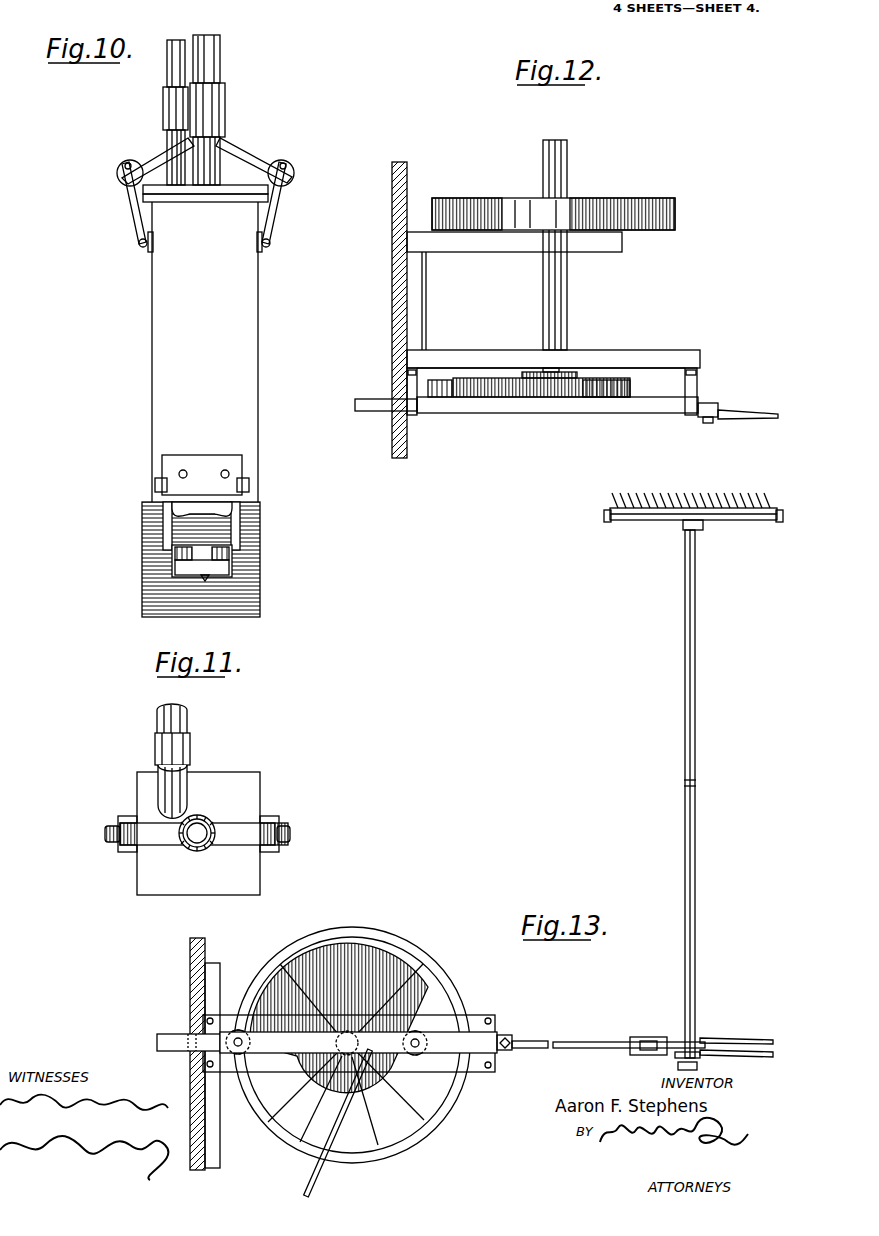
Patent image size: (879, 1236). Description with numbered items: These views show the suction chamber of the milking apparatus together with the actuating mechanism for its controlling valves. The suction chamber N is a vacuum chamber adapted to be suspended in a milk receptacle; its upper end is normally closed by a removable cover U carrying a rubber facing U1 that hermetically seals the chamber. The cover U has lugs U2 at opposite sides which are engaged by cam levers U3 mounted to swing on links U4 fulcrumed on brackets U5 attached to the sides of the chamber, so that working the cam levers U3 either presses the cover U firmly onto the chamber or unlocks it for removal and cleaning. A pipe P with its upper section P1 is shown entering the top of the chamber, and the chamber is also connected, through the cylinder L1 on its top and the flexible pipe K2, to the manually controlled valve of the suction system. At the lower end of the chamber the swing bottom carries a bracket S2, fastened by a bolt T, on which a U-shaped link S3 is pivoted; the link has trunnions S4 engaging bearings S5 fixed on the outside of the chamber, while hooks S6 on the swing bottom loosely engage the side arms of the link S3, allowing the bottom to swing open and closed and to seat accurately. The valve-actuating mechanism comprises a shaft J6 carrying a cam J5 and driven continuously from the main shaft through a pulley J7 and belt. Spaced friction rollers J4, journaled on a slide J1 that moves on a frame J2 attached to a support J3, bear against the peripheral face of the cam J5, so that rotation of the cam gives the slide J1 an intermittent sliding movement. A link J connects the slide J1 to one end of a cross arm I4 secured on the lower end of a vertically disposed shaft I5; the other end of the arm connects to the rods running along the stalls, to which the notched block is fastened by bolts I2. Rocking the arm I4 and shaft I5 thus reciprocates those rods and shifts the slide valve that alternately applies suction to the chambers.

In FIG. 10, the upper pipe section P1 is at (220, 66).
In FIG. 11, the upper pipe section P1 is at (180, 723).
In FIG. 10, the pipe P is at (207, 170).
In FIG. 11, the pipe P is at (178, 788).
In FIG. 10, the removable cover U is at (193, 192).
In FIG. 10, the rubber facing U1 is at (230, 197).
In FIG. 11, the rubber facing U1 is at (197, 834).
In FIG. 10, the lugs U2 is at (120, 184).
In FIG. 11, the lugs U2 is at (105, 838).
In FIG. 10, the cam levers U3 is at (167, 153).
In FIG. 11, the cam levers U3 is at (123, 835).
In FIG. 10, the links U4 is at (278, 215).
In FIG. 11, the links U4 is at (122, 820).
In FIG. 10, the brackets U5 is at (148, 258).
In FIG. 10, the suction chamber N is at (163, 387).
In FIG. 11, the suction chamber N is at (175, 888).
In FIG. 10, the bracket S2 is at (190, 570).
In FIG. 10, the U-shaped link S3 is at (240, 538).
In FIG. 10, the trunnions S4 is at (155, 481).
In FIG. 10, the bearings S5 is at (178, 464).
In FIG. 10, the lugs or hooks S6 is at (247, 517).
In FIG. 10, the bolt T is at (213, 568).
In FIG. 11, the flexible pipe K2 is at (207, 817).
In FIG. 11, the cylinder L1 is at (198, 840).
In FIG. 12, the link J is at (755, 418).
In FIG. 13, the link J is at (575, 1042).
In FIG. 12, the slide J1 is at (540, 405).
In FIG. 13, the slide J1 is at (462, 1040).
In FIG. 13, the frame J2 is at (462, 1068).
In FIG. 12, the support J3 is at (453, 358).
In FIG. 13, the support J3 is at (210, 985).
In FIG. 12, the friction rollers J4 is at (630, 388).
In FIG. 13, the friction rollers J4 is at (426, 1037).
In FIG. 12, the cam J5 is at (507, 375).
In FIG. 13, the cam J5 is at (375, 973).
In FIG. 12, the shaft J6 is at (557, 308).
In FIG. 13, the shaft J6 is at (362, 1085).
In FIG. 12, the pulley J7 is at (654, 232).
In FIG. 13, the bolts I2 is at (765, 1038).
In FIG. 13, the cross arm I4 is at (705, 1040).
In FIG. 13, the vertically-disposed shaft I5 is at (697, 907).